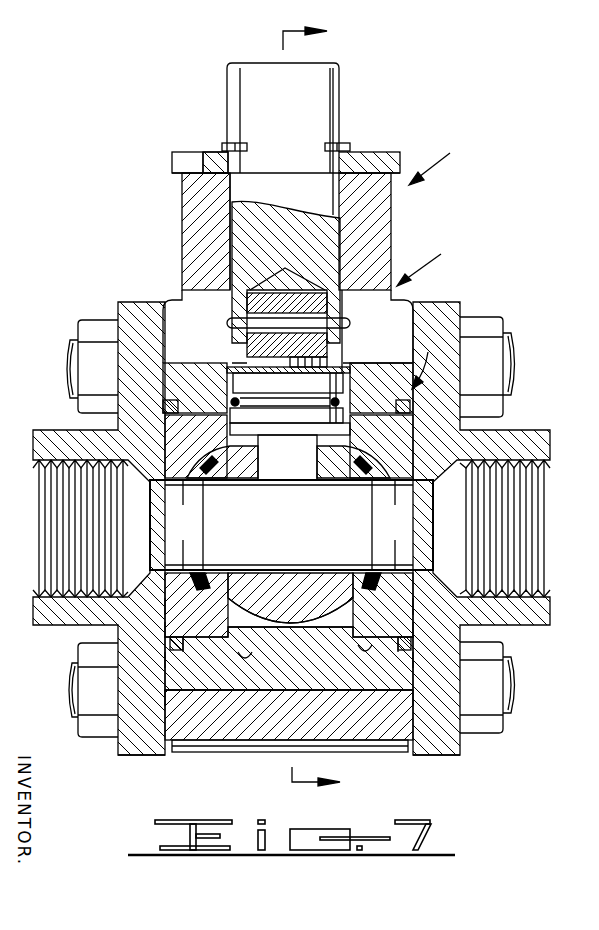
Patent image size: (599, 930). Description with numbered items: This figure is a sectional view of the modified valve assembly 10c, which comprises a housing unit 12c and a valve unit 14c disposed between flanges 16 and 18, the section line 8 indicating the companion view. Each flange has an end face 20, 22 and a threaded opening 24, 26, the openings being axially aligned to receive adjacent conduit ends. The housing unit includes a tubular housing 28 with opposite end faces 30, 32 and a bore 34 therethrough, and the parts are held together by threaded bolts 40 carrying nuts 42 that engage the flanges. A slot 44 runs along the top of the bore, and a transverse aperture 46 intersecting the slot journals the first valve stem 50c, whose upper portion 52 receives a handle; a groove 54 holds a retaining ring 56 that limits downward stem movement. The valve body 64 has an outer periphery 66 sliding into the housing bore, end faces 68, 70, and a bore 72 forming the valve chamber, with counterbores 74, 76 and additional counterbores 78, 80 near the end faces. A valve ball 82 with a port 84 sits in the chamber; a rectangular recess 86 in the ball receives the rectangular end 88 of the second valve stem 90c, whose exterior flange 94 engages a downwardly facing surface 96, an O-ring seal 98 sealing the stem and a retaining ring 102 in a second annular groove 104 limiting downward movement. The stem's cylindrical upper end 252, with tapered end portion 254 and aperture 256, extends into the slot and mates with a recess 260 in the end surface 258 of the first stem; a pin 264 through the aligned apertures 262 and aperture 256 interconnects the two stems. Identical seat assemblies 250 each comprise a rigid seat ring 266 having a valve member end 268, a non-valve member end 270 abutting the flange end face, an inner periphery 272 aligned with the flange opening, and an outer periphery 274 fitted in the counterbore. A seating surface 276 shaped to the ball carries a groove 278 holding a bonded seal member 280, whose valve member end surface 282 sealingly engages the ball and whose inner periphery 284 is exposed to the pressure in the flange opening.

The section line 8- 8 is at (319, 410).
The valve assembly 10c is at (449, 164).
The bonnet 12c is at (318, 304).
The valve body 14c is at (291, 528).
The flange 16 is at (143, 740).
The flange 18 is at (457, 737).
The end face 20 is at (180, 748).
The end face 22 is at (408, 750).
The threaded opening 24 is at (40, 479).
The threaded opening 26 is at (530, 583).
The tubular housing 28 is at (380, 203).
The end face 30 is at (165, 698).
The end face 32 is at (420, 700).
The bore 34 is at (264, 699).
The threaded bolts 40 is at (67, 375).
The threaded nuts 42 is at (98, 328).
The slot 44 is at (388, 316).
The aperture 46 is at (235, 220).
The first valve stem 50c is at (330, 235).
The upper portion 52 is at (316, 100).
The groove 54 is at (247, 150).
The retaining ring 56 is at (228, 143).
The valve body 64 is at (325, 690).
The outer periphery 66 is at (306, 690).
The end face 68 is at (164, 660).
The end face 70 is at (414, 660).
The bore 72 is at (257, 626).
The counterbore 74 is at (205, 650).
The counterbore 76 is at (380, 627).
The counterbore 78 is at (200, 647).
The counterbore 80 is at (378, 660).
The valve ball 82 is at (292, 577).
The port 84 is at (273, 545).
The rectangular recess 86 is at (302, 485).
The rectangular end 88 is at (283, 462).
The second valve stem 90c is at (345, 389).
The exterior flange 94 is at (345, 430).
The downwardly facing surface 96 is at (350, 413).
The O-ring seal 98 is at (231, 402).
The retaining ring 102 is at (230, 378).
The second annular groove 104 is at (271, 380).
The seat assemblies 250 is at (185, 480).
The upper end 252 is at (322, 362).
The tapered end portion 254 is at (300, 285).
The aperture 256 is at (287, 345).
The end surface 258 is at (345, 327).
The recess 260 is at (285, 272).
The apertures 262 is at (240, 315).
The pin 264 is at (287, 307).
The seat ring 266 is at (165, 630).
The valve member end 268 is at (345, 624).
The non-valve member end 270 is at (164, 605).
The inner periphery 272 is at (192, 562).
The outer periphery 274 is at (243, 660).
The seating surface 276 is at (229, 598).
The groove 278 is at (383, 605).
The seal member 280 is at (372, 587).
The valve member end surface 282 is at (300, 480).
The inner periphery 284 is at (200, 572).